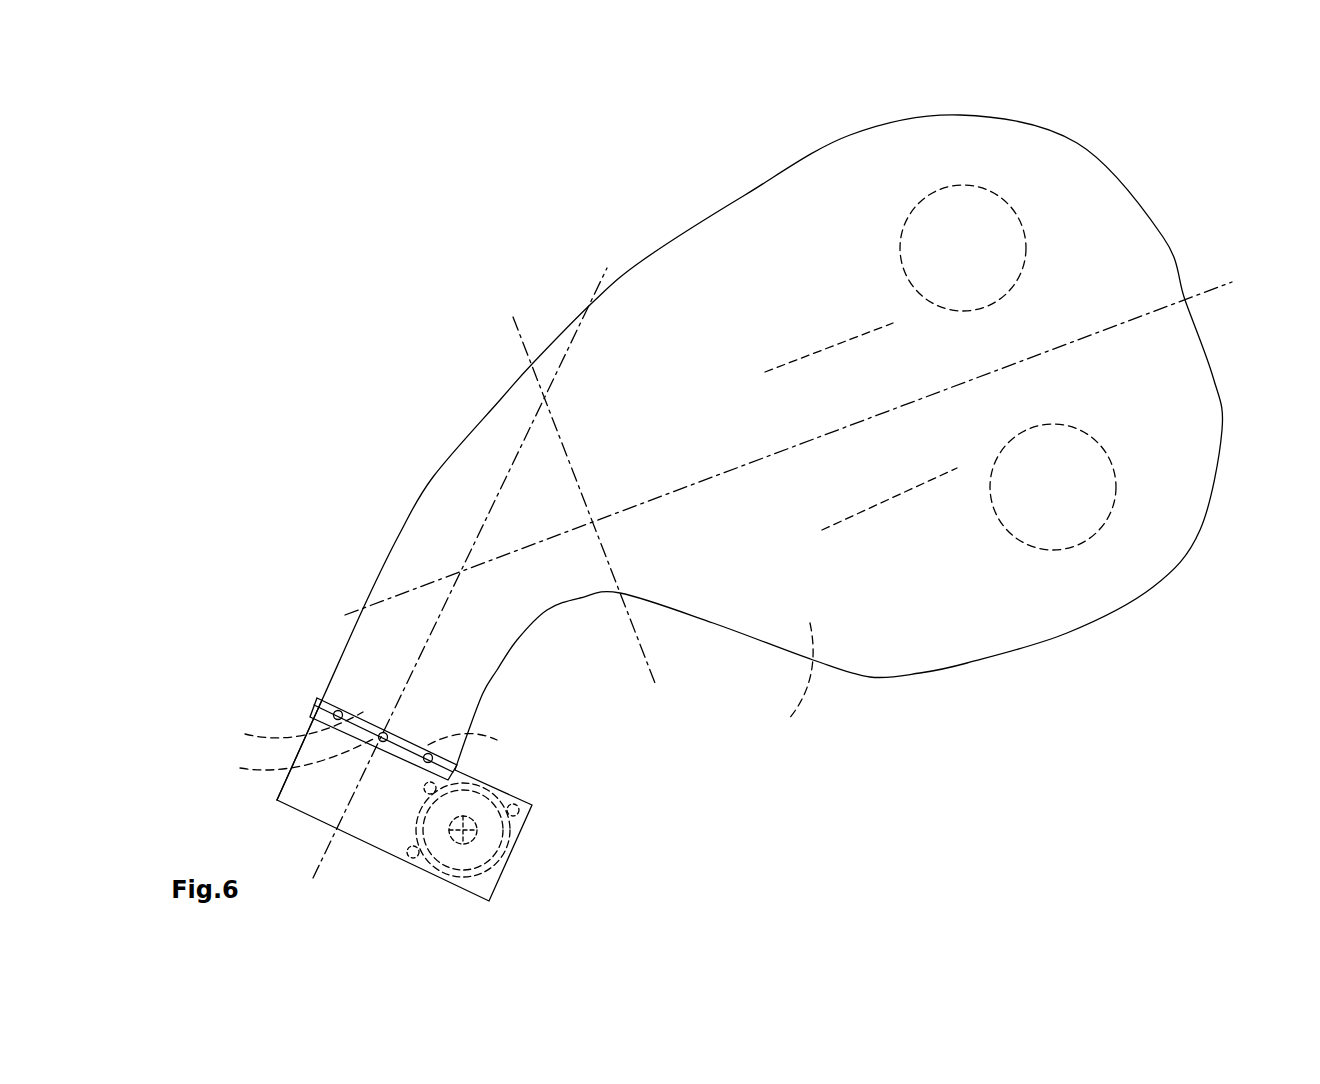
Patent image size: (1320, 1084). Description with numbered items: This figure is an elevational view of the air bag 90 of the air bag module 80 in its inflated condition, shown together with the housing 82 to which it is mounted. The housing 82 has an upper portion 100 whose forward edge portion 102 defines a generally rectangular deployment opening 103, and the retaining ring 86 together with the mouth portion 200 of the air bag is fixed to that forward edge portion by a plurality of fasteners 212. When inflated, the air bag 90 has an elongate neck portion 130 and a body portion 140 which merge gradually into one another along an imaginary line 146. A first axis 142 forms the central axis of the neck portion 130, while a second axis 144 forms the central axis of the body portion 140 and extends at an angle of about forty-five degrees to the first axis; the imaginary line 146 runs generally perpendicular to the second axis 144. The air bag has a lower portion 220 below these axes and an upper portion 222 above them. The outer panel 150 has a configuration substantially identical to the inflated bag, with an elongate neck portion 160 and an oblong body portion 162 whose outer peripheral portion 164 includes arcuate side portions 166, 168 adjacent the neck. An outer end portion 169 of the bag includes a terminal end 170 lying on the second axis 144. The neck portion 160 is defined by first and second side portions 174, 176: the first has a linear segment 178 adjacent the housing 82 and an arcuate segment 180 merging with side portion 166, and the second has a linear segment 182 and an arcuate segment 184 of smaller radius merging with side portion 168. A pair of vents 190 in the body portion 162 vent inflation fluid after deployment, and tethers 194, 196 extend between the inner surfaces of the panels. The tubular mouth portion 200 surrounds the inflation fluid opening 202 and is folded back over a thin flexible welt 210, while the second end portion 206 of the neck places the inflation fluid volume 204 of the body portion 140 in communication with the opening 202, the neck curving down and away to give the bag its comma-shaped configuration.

The air bag module 80 is at (305, 385).
The housing 82 is at (297, 813).
The retaining ring 86 is at (408, 744).
The air bag 90 is at (400, 272).
The upper portion of the housing 100 is at (277, 797).
The forward edge portion 102 is at (397, 768).
The deployment opening 103 is at (481, 747).
The neck portion 130 is at (350, 470).
The body portion 140 is at (1078, 697).
The first axis 142 is at (520, 457).
The second axis 144 is at (622, 510).
The imaginary line 146 is at (563, 440).
The outer panel 150 is at (877, 657).
The neck portion of the outer panel 160 is at (440, 535).
The body portion of the outer panel 162 is at (1060, 167).
The outer peripheral portion 164 is at (748, 227).
The arcuate side portion 166 is at (622, 280).
The arcuate side portion 168 is at (713, 623).
The outer end portion 169 is at (1163, 237).
The terminal end 170 is at (1187, 300).
The first side portion 174 is at (380, 568).
The second side portion 176 is at (517, 640).
The linear segment 178 is at (347, 645).
The arcuate segment 180 is at (433, 477).
The linear segment 182 is at (490, 693).
The arcuate segment 184 is at (580, 600).
The vents 190 is at (1013, 288).
The tether 194 is at (855, 340).
The tether 196 is at (905, 492).
The mouth portion 200 is at (347, 685).
The inflation fluid opening 202 is at (285, 727).
The inflation fluid volume 204 is at (783, 683).
The second end portion 206 is at (513, 403).
The welt 210 is at (286, 758).
The fasteners 212 is at (315, 708).
The lower portion 220 is at (607, 683).
The upper portion 222 is at (753, 170).